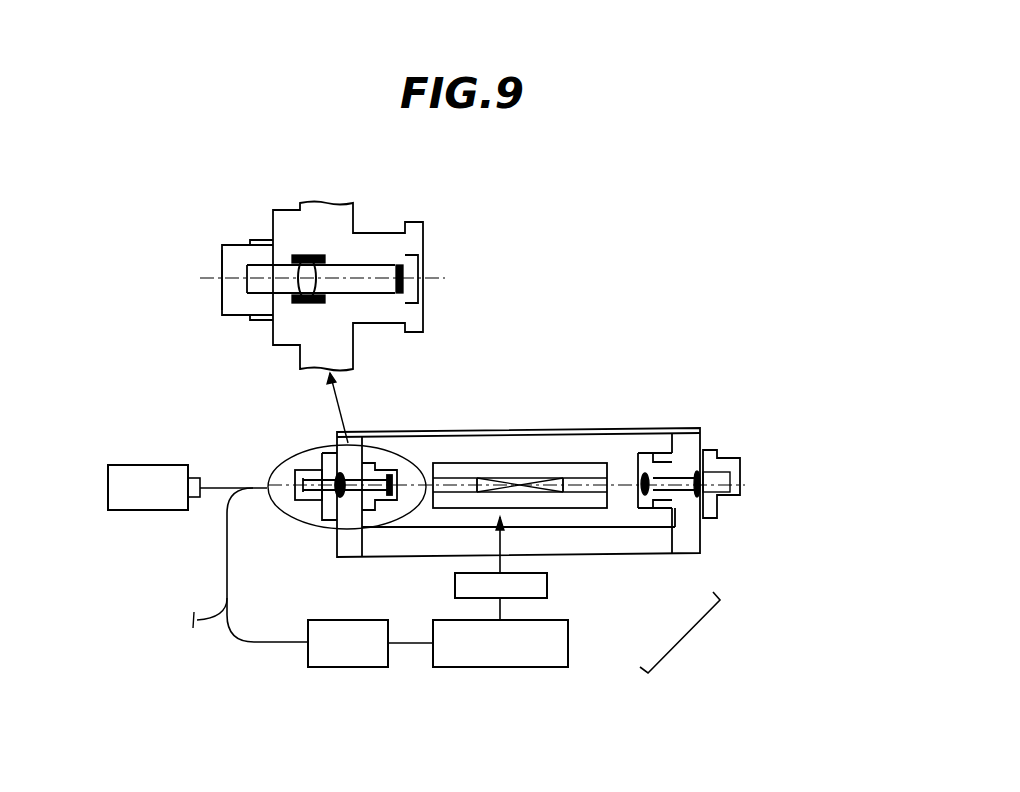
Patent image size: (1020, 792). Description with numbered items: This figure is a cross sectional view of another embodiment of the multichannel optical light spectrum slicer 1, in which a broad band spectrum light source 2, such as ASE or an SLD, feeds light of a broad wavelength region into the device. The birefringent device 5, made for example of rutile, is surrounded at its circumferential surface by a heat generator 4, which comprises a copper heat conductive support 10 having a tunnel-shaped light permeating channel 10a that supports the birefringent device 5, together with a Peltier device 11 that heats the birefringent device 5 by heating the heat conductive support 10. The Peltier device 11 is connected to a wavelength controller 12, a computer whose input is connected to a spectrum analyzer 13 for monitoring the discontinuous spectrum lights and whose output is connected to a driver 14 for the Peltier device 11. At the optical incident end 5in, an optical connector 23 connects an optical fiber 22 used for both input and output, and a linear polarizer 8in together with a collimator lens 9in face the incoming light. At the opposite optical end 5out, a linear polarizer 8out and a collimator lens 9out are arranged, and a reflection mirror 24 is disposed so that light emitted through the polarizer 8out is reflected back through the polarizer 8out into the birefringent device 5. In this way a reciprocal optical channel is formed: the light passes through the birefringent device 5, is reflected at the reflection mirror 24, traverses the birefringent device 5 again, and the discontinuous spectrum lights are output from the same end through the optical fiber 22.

The multichannel optical light spectrum slicer 1 is at (620, 307).
The broad band spectrum light source 2 is at (150, 480).
The heat generator 4 is at (680, 632).
The birefringent device 5 is at (517, 480).
The optical incident end 5in is at (468, 477).
The optical end 5out is at (577, 478).
The linear polarizer 8in is at (402, 275).
The linear polarizer 8out is at (640, 473).
The collimator lens 9in is at (307, 267).
The collimator lens 9out is at (700, 470).
The heat conductive support 10 is at (593, 500).
The light permeating channel 10a is at (452, 484).
The Peltier device 11 is at (555, 518).
The wavelength controller 12 is at (467, 647).
The spectrum analyzer 13 is at (362, 643).
The driver 14 is at (472, 588).
The optical fiber 22 is at (222, 485).
The optical connector 23 is at (295, 238).
The reflection mirror 24 is at (733, 498).